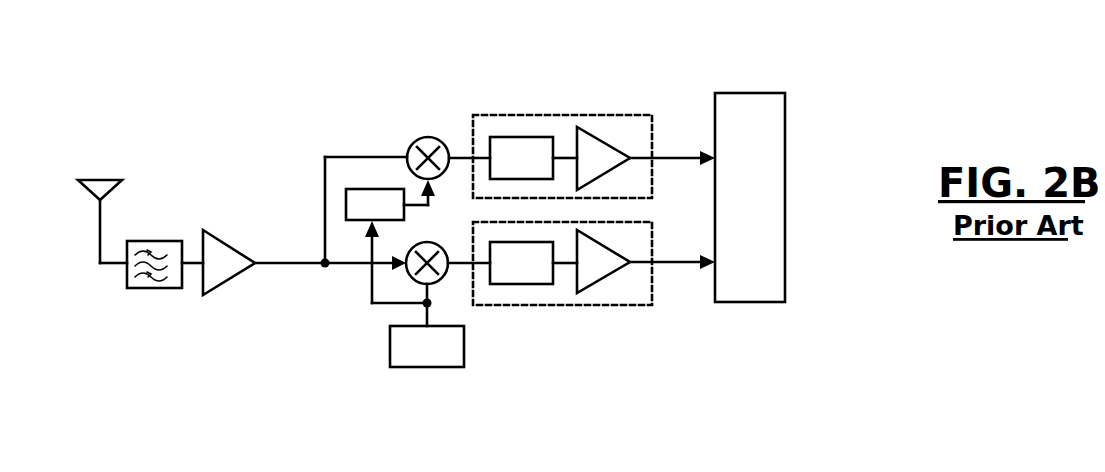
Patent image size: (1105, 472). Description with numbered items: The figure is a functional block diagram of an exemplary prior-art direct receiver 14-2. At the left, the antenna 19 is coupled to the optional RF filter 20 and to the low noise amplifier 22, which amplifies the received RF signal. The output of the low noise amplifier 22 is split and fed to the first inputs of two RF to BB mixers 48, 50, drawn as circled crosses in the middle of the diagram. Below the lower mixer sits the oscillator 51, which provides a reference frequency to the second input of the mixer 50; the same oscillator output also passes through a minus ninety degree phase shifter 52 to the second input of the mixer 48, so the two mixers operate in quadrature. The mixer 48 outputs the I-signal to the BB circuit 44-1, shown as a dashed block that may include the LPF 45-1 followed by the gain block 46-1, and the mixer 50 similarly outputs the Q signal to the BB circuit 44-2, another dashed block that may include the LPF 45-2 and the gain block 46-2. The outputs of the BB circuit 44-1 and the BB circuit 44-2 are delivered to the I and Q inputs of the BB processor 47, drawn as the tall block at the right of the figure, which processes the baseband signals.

The direct receiver 14-2 is at (216, 65).
The antenna 19 is at (122, 183).
The RF filter 20 is at (157, 289).
The low noise amplifier 22 is at (233, 278).
The RF to BB mixer 48 is at (420, 136).
The −90° phase shifter 52 is at (407, 212).
The RF to BB mixer 50 is at (433, 283).
The oscillator 51 is at (428, 368).
The BB circuit 44-1 is at (630, 115).
The LPF 45-1 is at (513, 137).
The gain block 46-1 is at (588, 130).
The BB circuit 44-2 is at (652, 305).
The LPF 45-2 is at (517, 285).
The gain block 46-2 is at (595, 283).
The BB processor 47 is at (745, 93).